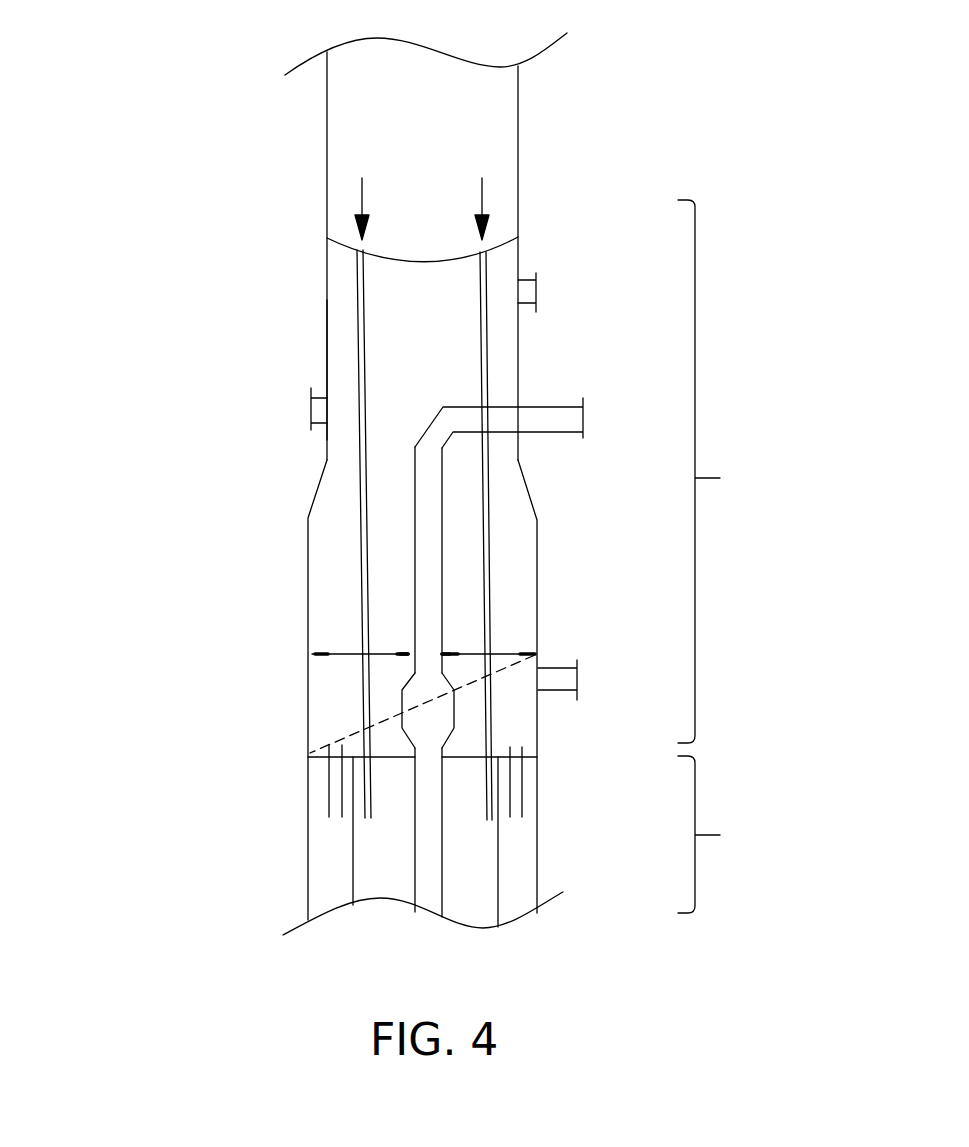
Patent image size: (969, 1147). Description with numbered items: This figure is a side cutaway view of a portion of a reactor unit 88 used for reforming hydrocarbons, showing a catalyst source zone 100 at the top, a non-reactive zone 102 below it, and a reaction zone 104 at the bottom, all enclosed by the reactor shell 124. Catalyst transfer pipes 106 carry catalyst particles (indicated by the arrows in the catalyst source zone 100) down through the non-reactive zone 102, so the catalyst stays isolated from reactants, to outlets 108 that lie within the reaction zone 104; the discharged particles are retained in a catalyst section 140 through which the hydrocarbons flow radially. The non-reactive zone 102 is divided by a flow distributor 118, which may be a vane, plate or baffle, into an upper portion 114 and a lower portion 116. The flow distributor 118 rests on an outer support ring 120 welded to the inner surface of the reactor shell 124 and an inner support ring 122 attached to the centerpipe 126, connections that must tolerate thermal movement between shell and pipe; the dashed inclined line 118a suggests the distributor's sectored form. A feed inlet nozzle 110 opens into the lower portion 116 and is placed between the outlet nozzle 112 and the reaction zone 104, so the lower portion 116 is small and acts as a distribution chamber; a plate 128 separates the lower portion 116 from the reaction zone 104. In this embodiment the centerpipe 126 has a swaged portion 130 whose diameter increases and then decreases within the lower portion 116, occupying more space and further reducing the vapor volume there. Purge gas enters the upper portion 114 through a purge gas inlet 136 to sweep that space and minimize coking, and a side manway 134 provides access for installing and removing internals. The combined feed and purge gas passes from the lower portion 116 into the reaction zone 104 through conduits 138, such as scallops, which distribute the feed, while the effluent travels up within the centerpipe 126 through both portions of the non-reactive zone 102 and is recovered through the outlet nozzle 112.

The reactor unit 88 is at (605, 120).
The catalyst source zone 100 is at (342, 137).
The non-reactive zone 102 is at (730, 471).
The reaction zone 104 is at (730, 834).
The catalyst transfer pipes 106 is at (357, 302).
The outlets 108 is at (362, 828).
The feed inlet nozzle 110 is at (568, 663).
The outlet nozzle 112 is at (575, 407).
The upper portion 114 is at (352, 368).
The lower portion 116 is at (353, 720).
The flow distributor 118 is at (500, 653).
The inclined plate portion 118a is at (337, 743).
The outer support ring 120 is at (320, 655).
The inner support ring 122 is at (408, 657).
The reactor shell 124 is at (308, 545).
The centerpipe 126 is at (445, 510).
The plate 128 is at (463, 757).
The swaged portion 130 is at (455, 728).
The side manway 134 is at (310, 413).
The purge gas inlet 136 is at (535, 277).
The conduits 138 is at (335, 795).
The catalyst section 140 is at (370, 860).